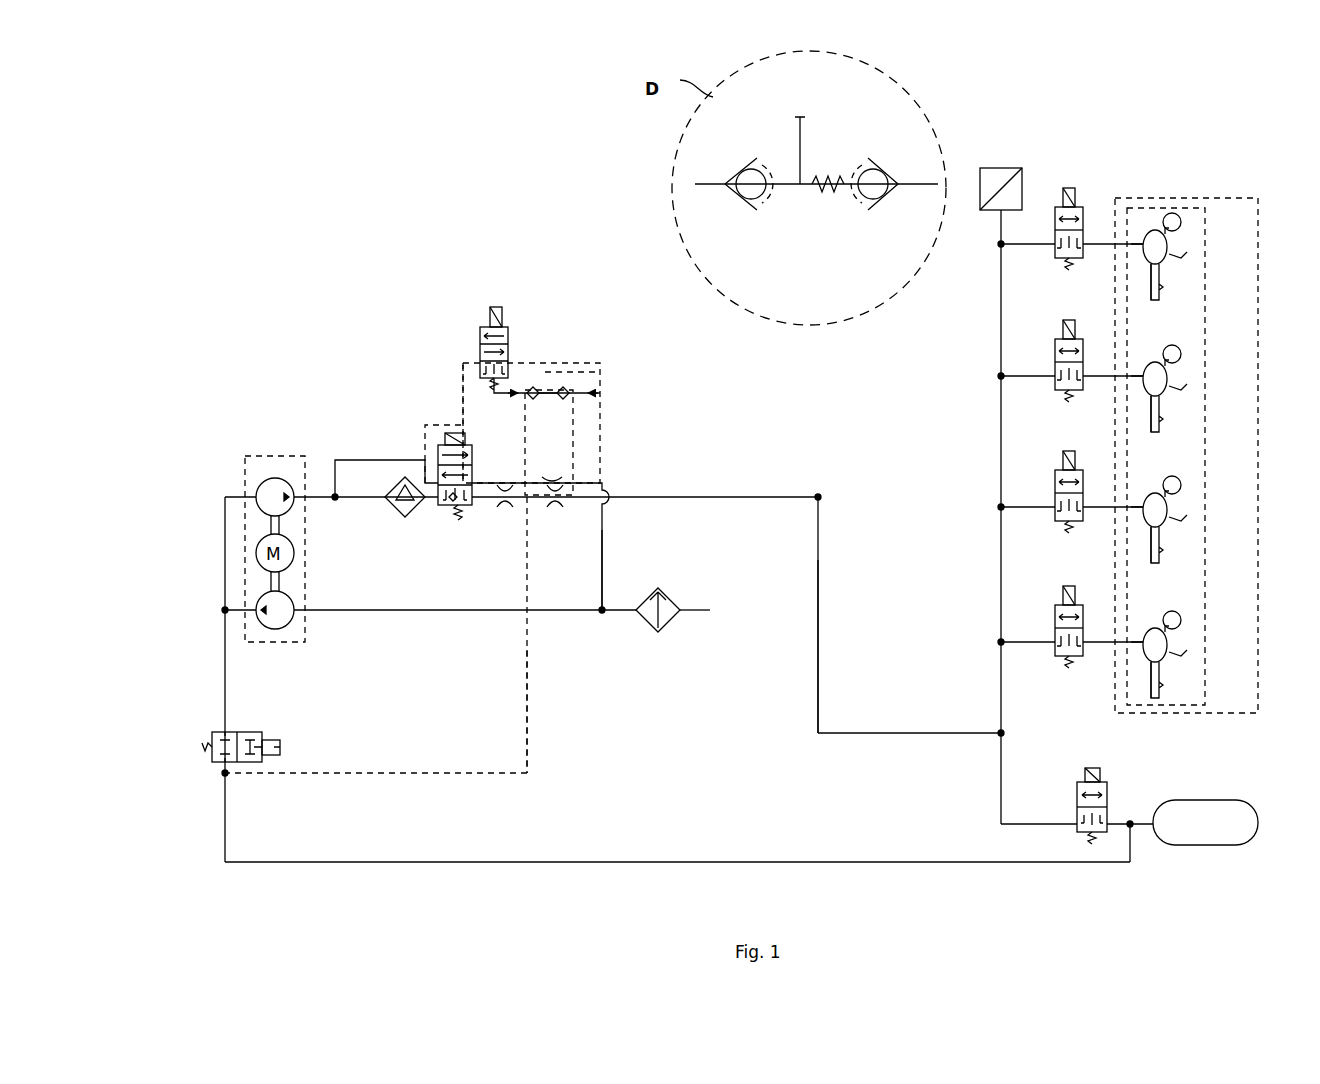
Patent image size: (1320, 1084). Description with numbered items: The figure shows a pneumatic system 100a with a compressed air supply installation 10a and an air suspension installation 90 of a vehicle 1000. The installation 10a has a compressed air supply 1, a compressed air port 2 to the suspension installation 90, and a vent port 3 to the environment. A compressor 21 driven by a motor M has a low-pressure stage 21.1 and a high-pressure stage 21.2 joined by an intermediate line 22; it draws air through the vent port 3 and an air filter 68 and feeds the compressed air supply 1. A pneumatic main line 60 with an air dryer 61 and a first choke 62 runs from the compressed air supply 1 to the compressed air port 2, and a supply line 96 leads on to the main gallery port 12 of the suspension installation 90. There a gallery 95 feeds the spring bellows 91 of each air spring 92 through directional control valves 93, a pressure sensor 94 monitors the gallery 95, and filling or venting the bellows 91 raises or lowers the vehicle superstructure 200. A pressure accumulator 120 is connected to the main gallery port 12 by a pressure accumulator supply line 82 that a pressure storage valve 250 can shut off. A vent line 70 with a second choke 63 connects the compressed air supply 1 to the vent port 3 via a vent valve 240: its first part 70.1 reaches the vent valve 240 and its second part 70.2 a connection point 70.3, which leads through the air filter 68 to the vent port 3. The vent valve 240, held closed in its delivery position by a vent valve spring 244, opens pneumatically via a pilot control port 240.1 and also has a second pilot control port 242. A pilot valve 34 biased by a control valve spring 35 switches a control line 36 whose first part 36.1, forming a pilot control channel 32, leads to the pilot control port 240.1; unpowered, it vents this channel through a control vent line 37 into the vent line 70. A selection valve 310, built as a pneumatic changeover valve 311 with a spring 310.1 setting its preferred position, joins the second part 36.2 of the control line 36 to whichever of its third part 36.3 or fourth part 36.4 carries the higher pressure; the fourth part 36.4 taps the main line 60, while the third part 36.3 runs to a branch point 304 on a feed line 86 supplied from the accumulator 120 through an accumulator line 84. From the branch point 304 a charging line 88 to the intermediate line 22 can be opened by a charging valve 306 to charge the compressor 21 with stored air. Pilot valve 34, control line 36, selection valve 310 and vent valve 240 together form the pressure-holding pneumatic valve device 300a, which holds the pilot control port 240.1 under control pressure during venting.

The pneumatic system 100a is at (608, 59).
The compressed air supply installation 10a is at (562, 274).
The compressed air supply 1 is at (333, 492).
The compressed air port 2 is at (816, 496).
The vent port 3 is at (702, 608).
The main gallery port 12 is at (1003, 733).
The compressor 21 is at (292, 643).
The low-pressure stage 21.1 is at (272, 643).
The high-pressure stage 21.2 is at (268, 480).
The intermediate line 22 is at (225, 550).
The pilot control channel 32 is at (450, 405).
The pilot valve 34 is at (484, 327).
The control valve spring 35 is at (494, 380).
The control line 36 is at (532, 712).
The first part of the control line 36.1 is at (463, 370).
The second part of the control line 36.2 is at (582, 393).
The third part of the control line 36.3 is at (528, 580).
The fourth part of the control line 36.4 is at (590, 410).
The control vent line 37 is at (600, 370).
The pneumatic main line 60 is at (415, 515).
The air dryer 61 is at (398, 517).
The first choke 62 is at (512, 508).
The second choke 63 is at (560, 501).
The air filter 68 is at (658, 630).
The vent line 70 is at (620, 542).
The first part of the vent line 70.1 is at (334, 493).
The second part of the vent line 70.2 is at (603, 583).
The connection point 70.3 is at (600, 610).
The pressure accumulator supply line 82 is at (1001, 824).
The accumulator line 84 is at (1132, 822).
The feed line 86 is at (862, 861).
The charging line 88 is at (225, 638).
The air suspension installation 90 is at (1166, 102).
The spring bellows 91 is at (1182, 256).
The air spring 92 is at (1188, 270).
The directional control valve 93 is at (1069, 188).
The pressure sensor 94 is at (1001, 168).
The gallery 95 is at (1001, 568).
The supply line 96 is at (820, 555).
The pressure accumulator 120 is at (1190, 800).
The vehicle superstructure 200 is at (1162, 210).
The vent valve 240 is at (425, 432).
The pilot control port 240.1 is at (418, 420).
The second pilot control port 242 is at (436, 452).
The vent valve spring 244 is at (452, 521).
The pressure storage valve 250 is at (1090, 768).
The pressure-holding pneumatic valve device 300a is at (606, 722).
The branch point 304 is at (223, 775).
The charging valve 306 is at (212, 740).
The selection valve 310 is at (548, 404).
The spring 310.1 is at (572, 400).
The pneumatic changeover valve 311 is at (562, 433).
The vehicle 1000 is at (1212, 200).